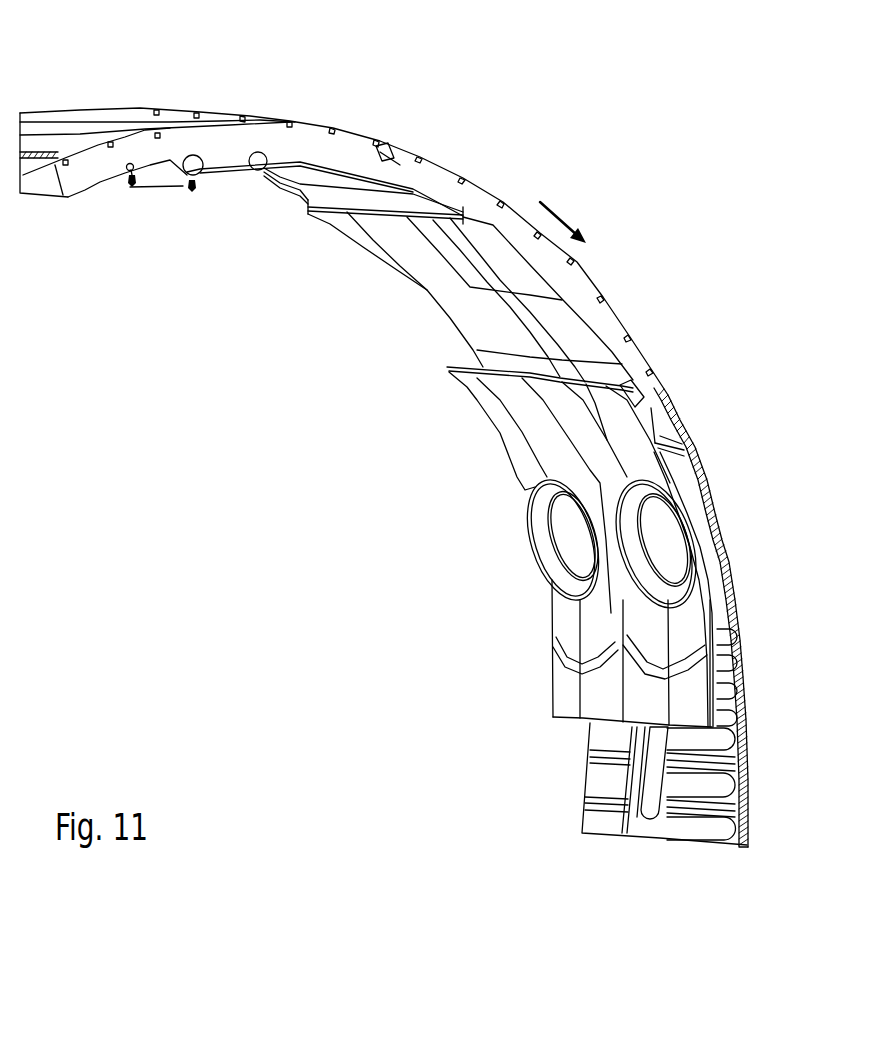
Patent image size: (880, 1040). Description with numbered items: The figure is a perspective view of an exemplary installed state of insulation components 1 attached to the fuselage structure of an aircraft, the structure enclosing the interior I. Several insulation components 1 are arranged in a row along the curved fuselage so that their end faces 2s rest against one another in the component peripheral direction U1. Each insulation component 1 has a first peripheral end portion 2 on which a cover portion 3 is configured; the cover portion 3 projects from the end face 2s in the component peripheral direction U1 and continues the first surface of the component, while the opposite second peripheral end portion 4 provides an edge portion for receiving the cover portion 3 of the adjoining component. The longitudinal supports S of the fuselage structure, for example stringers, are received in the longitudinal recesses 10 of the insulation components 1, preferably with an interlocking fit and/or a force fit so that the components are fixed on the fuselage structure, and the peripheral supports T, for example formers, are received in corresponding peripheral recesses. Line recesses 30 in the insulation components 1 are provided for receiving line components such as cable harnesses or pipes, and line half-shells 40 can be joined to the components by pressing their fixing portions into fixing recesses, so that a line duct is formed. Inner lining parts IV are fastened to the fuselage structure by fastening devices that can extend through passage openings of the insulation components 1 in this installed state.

The insulation component 1 is at (191, 82).
The first peripheral end portion 2 is at (688, 362).
The end face 2s is at (378, 147).
The cover portion 3 is at (388, 200).
The second peripheral end portion 4 is at (75, 178).
The longitudinal recess 10 is at (112, 150).
The line recess 30 is at (132, 187).
The line half-shell 40 is at (247, 173).
The component peripheral direction U1 is at (557, 213).
The interior I is at (262, 466).
The inner lining part IV is at (568, 697).
The peripheral support T is at (630, 822).
The longitudinal support S is at (690, 817).